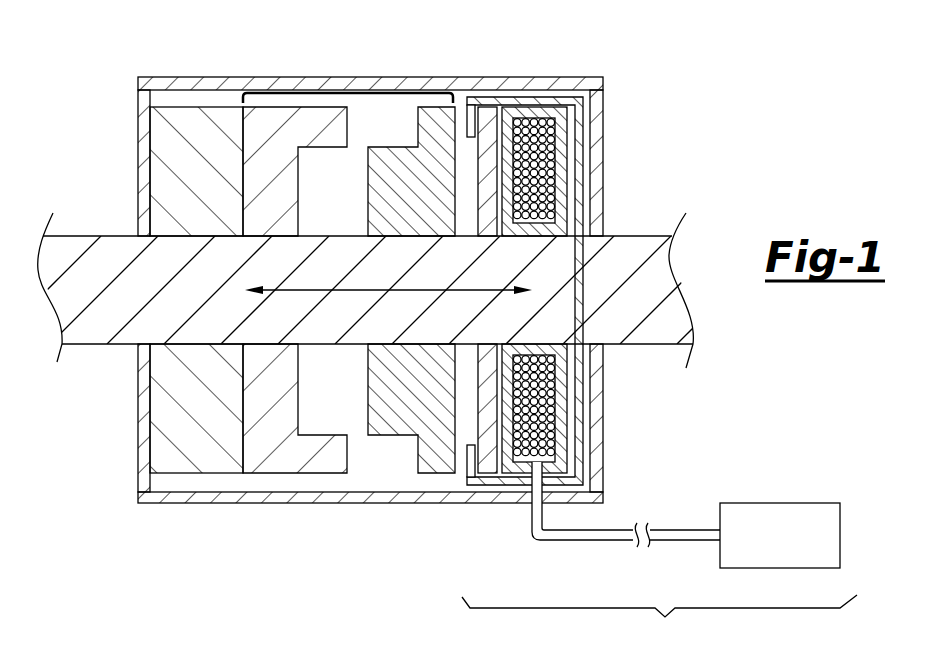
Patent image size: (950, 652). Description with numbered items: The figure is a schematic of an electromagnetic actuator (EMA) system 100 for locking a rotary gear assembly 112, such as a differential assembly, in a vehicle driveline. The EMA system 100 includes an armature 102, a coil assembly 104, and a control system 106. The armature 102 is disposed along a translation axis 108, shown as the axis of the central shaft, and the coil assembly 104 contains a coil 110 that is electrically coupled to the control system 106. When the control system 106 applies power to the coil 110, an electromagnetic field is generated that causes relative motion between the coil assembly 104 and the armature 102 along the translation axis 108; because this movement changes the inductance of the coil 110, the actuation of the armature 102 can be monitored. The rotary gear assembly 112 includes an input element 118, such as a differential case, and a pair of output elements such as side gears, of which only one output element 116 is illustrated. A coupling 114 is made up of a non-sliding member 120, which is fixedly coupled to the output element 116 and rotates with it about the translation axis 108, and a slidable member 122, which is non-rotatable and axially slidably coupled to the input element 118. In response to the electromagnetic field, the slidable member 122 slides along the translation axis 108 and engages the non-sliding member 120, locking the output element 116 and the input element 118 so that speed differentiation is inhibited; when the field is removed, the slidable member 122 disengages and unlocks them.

The electromagnetic actuator (EMA) system 100 is at (659, 623).
The armature 102 is at (479, 107).
The coil assembly 104 is at (553, 88).
The control system 106 is at (803, 503).
The translation axis 108 is at (428, 289).
The coil 110 is at (552, 165).
The rotary gear assembly 112 is at (214, 72).
The coupling 114 is at (352, 92).
The output element 116 is at (160, 177).
The input element 118 is at (138, 86).
The non-sliding member 120 is at (273, 465).
The slidable member 122 is at (404, 146).